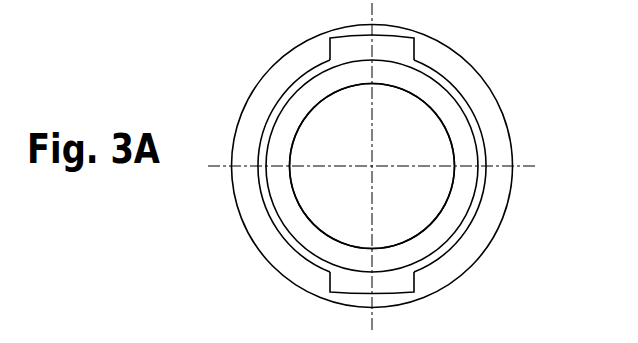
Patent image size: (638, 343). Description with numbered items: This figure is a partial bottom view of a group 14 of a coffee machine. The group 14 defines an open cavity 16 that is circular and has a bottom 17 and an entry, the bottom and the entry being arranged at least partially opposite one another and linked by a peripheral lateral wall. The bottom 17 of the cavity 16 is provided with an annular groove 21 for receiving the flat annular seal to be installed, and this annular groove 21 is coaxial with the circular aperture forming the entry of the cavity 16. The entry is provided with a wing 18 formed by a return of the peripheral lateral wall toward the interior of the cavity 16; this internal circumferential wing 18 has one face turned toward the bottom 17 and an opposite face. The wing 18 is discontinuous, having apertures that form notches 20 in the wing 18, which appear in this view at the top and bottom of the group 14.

The group 14 is at (499, 107).
The cavity 16 is at (340, 132).
The bottom 17 is at (408, 122).
The wing 18 is at (468, 248).
The notches 20 is at (397, 284).
The annular groove 21 is at (463, 190).